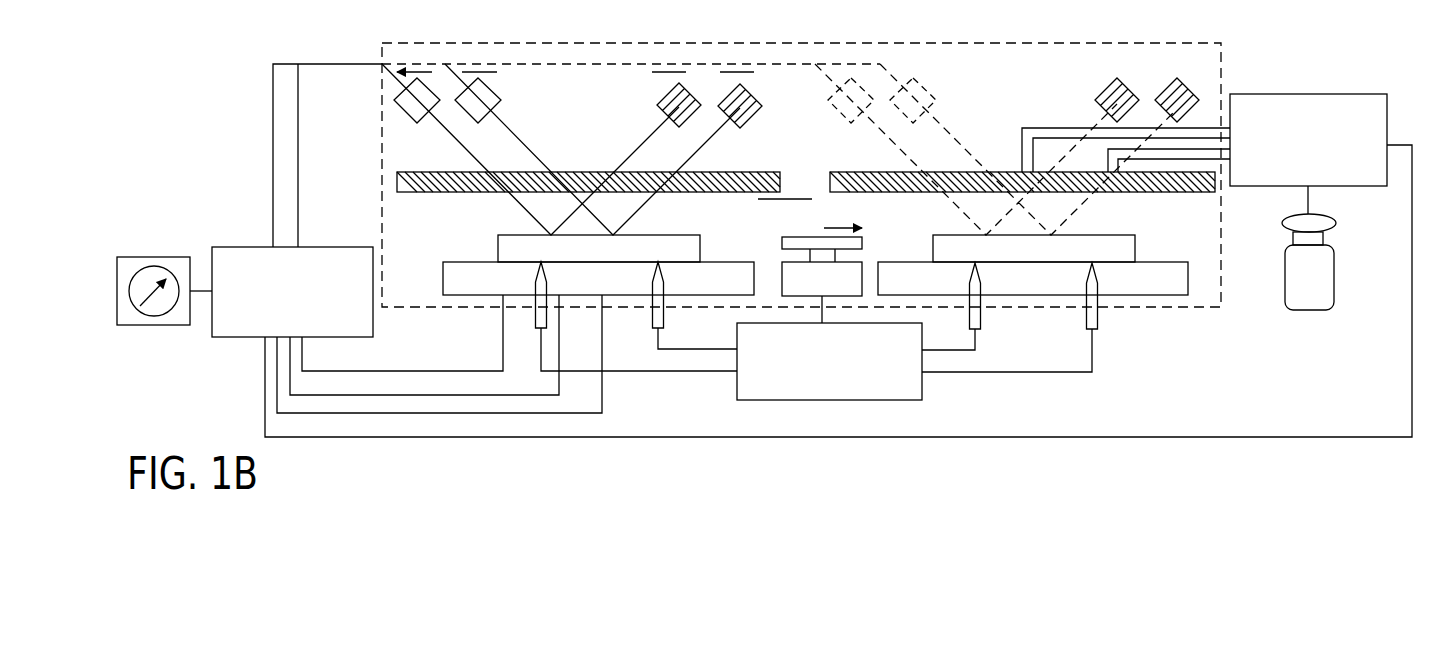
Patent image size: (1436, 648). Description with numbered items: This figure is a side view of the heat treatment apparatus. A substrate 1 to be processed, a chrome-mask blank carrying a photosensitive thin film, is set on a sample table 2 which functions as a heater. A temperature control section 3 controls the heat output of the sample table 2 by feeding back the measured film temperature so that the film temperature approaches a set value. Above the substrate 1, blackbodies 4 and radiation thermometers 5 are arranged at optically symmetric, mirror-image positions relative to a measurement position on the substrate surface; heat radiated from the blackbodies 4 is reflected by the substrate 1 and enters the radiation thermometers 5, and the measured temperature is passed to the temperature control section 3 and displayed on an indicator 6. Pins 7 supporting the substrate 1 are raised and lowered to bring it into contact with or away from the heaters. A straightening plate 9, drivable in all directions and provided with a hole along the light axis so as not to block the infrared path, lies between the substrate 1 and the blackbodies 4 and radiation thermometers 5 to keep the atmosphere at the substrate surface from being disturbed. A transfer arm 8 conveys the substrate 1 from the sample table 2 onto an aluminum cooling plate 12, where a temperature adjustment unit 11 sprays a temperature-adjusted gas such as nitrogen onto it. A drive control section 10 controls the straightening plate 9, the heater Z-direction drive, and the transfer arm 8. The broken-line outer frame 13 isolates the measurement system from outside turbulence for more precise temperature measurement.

The substrate to be processed 1 is at (686, 235).
The sample table 2 is at (730, 262).
The temperature control section 3 is at (323, 247).
The blackbody 4 is at (657, 105).
The radiation thermometer 5 is at (412, 118).
The indicator 6 is at (150, 257).
The pin 7 is at (535, 318).
The transfer arm 8 is at (797, 236).
The straightening plate 9 is at (780, 182).
The drive control section 10 is at (922, 390).
The temperature adjustment unit 11 is at (1306, 94).
The cooling plate 12 is at (1170, 262).
The outer frame 13 is at (1153, 43).